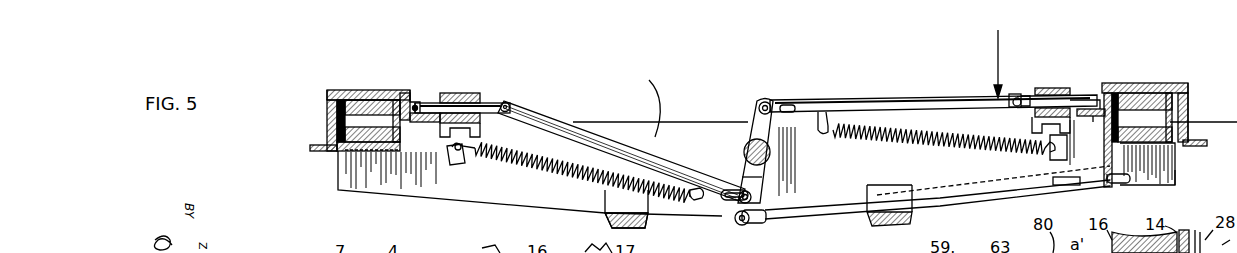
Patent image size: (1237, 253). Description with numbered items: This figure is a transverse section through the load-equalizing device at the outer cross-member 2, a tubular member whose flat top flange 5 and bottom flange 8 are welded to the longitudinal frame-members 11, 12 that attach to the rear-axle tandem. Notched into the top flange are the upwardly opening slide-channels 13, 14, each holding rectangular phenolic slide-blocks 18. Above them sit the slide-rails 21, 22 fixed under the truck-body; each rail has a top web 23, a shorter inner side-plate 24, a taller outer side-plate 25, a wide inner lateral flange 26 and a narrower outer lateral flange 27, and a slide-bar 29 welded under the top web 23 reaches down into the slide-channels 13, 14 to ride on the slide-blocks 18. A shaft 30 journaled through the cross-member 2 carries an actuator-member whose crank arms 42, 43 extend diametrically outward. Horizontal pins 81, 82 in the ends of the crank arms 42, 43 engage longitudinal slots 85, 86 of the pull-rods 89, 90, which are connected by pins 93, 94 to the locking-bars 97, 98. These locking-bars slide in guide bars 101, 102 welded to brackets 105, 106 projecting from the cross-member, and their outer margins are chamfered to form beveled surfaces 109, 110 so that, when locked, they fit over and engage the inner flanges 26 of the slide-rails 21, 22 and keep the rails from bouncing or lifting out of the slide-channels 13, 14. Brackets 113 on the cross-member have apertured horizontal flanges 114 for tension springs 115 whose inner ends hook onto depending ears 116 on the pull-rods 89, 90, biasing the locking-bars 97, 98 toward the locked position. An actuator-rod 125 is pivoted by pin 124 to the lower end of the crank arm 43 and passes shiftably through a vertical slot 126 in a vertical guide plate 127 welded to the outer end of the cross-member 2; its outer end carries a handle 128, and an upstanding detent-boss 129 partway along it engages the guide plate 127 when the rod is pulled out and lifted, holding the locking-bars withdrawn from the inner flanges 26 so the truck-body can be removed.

The cross-member 2 is at (397, 191).
The top flange 5 is at (648, 100).
The bottom flange 8 is at (995, 54).
The longitudinal frame-member 11 is at (610, 222).
The longitudinal frame-member 12 is at (912, 223).
The slide-channel 13 is at (372, 147).
The slide-channel 14 is at (1168, 170).
The slide-block 18 is at (360, 120).
The slide-rail 21 is at (372, 90).
The slide-rail 22 is at (1170, 85).
The top web 23 is at (347, 90).
The inner side-plate 24 is at (408, 105).
The outer side-plate 25 is at (327, 115).
The inner lateral flange 26 is at (428, 122).
The outer lateral flange 27 is at (315, 152).
The slide-bar 29 is at (330, 90).
The shaft 30 is at (742, 145).
The crank arm 42 is at (758, 128).
The crank arm 43 is at (752, 177).
The horizontal pin 81 is at (765, 100).
The horizontal pin 82 is at (742, 202).
The longitudinal slot 85 is at (785, 105).
The longitudinal slot 86 is at (727, 197).
The pull-rod 89 is at (890, 100).
The pull-rod 90 is at (553, 128).
The pin 93 is at (510, 104).
The pin 94 is at (1016, 98).
The locking-bar 97 is at (482, 107).
The locking-bar 98 is at (1021, 95).
The guide bar 101 is at (463, 95).
The guide bar 102 is at (1053, 88).
The bracket 105 is at (476, 130).
The bracket 106 is at (1035, 128).
The beveled surface 109 is at (415, 106).
The beveled surface 110 is at (1090, 108).
The bracket 113 is at (452, 160).
The apertured horizontal flange 114 is at (459, 152).
The tension spring 115 is at (565, 172).
The depending ear 116 is at (700, 190).
The pin 124 is at (743, 224).
The actuator-rod 125 is at (808, 212).
The vertical slot 126 is at (1112, 180).
The vertical guide plate 127 is at (1116, 182).
The handle 128 is at (1175, 176).
The detent-boss 129 is at (1064, 186).